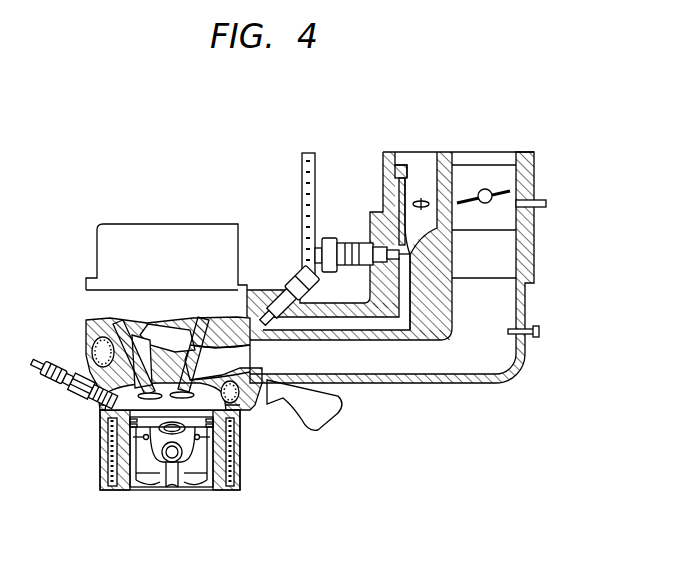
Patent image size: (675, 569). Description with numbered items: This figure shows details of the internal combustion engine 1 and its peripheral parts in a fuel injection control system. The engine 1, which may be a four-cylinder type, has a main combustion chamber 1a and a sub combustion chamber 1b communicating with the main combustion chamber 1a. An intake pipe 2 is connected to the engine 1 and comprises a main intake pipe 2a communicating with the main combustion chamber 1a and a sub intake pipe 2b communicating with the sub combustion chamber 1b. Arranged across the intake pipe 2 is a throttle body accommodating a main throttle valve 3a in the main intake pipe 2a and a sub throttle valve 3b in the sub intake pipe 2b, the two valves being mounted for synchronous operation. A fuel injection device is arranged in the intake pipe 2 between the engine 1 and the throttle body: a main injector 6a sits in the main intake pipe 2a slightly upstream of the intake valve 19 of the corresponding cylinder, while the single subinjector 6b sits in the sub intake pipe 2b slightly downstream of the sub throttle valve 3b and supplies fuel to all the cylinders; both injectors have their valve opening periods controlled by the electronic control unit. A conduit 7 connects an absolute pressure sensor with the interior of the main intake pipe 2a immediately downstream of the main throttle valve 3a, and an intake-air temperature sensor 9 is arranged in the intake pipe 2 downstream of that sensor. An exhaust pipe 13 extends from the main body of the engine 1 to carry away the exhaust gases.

The internal combustion engine 1 is at (96, 456).
The main combustion chamber 1a is at (103, 432).
The sub combustion chamber 1b is at (97, 410).
The intake pipe 2 is at (538, 303).
The main intake pipe 2a is at (374, 363).
The sub intake pipe 2b is at (357, 326).
The main throttle valve 3a is at (497, 200).
The sub throttle valve 3b is at (425, 210).
The main injector 6a is at (278, 305).
The subinjector 6b is at (355, 238).
The conduit 7 is at (544, 203).
The intake-air temperature sensor 9 is at (531, 337).
The exhaust pipe 13 is at (300, 400).
The intake valve 19 is at (213, 377).